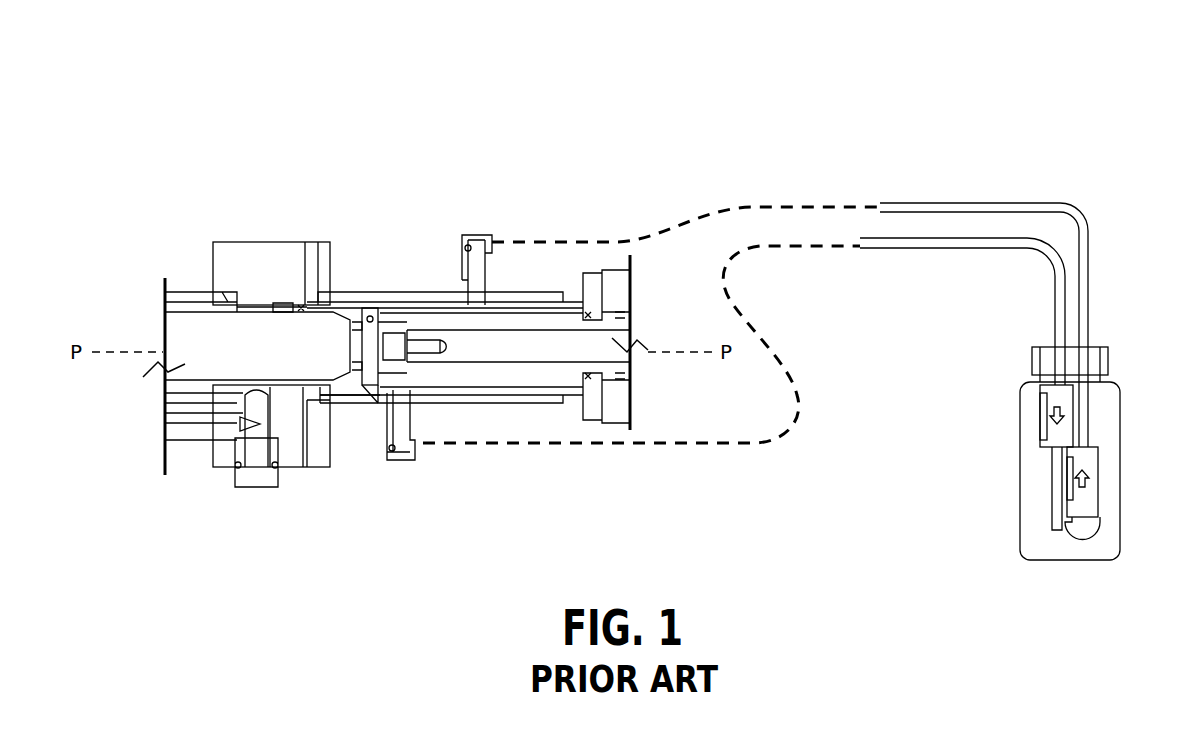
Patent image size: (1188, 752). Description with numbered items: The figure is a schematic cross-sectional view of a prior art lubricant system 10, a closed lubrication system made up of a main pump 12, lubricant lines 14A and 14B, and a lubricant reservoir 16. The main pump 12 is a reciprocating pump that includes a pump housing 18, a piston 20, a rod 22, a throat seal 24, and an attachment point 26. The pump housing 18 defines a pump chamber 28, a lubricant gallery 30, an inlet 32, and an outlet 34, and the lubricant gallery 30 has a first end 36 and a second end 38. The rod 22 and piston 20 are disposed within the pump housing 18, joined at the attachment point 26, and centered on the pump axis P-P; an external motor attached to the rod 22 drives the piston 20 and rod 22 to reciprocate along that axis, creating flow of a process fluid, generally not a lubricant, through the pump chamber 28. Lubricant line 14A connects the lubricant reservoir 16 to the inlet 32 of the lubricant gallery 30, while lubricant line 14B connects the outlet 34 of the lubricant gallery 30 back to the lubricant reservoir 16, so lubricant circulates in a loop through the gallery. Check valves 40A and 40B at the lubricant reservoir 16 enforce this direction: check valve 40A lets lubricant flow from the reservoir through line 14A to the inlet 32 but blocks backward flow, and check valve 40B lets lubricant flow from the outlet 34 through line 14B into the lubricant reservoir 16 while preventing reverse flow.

The lubricant system 10 is at (896, 100).
The main pump 12 is at (241, 126).
The lubricant line 14A is at (750, 207).
The lubricant line 14B is at (700, 448).
The lubricant reservoir 16 is at (1120, 420).
The pump housing 18 is at (385, 290).
The piston 20 is at (200, 330).
The rod 22 is at (473, 347).
The throat seal 24 is at (288, 303).
The attachment point 26 is at (380, 393).
The pump chamber 28 is at (205, 395).
The lubricant gallery 30 is at (514, 389).
The inlet 32 is at (470, 235).
The outlet 34 is at (392, 455).
The first end 36 is at (570, 408).
The second end 38 is at (300, 303).
The check valve 40A is at (1100, 475).
The check valve 40B is at (1040, 420).